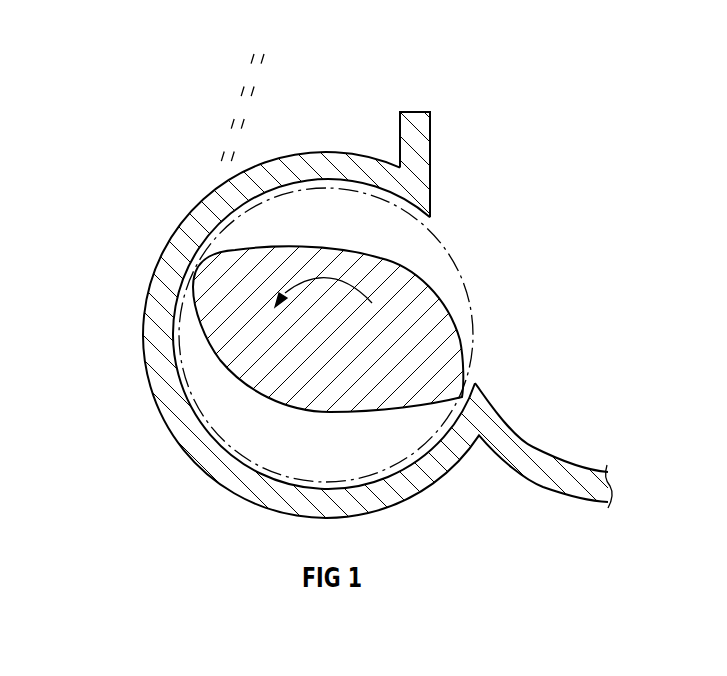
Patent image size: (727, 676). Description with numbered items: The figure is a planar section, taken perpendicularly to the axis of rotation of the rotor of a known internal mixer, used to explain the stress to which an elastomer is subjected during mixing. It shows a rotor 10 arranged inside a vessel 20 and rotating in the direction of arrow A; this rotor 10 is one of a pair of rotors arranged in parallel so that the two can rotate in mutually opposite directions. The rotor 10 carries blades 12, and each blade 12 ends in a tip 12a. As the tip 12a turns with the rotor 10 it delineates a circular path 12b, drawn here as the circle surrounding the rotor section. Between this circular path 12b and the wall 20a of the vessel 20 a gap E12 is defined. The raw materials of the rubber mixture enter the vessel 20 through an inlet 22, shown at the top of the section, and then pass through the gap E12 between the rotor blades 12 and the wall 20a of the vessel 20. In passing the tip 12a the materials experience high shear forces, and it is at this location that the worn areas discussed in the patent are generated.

The rotor 10 is at (415, 323).
The blade 12 is at (318, 335).
The tip 12a is at (197, 273).
The circular path 12b is at (462, 270).
The vessel 20 is at (322, 152).
The wall 20a is at (362, 181).
The inlet 22 is at (432, 112).
The arrow A is at (368, 262).
The gap E12 is at (288, 78).